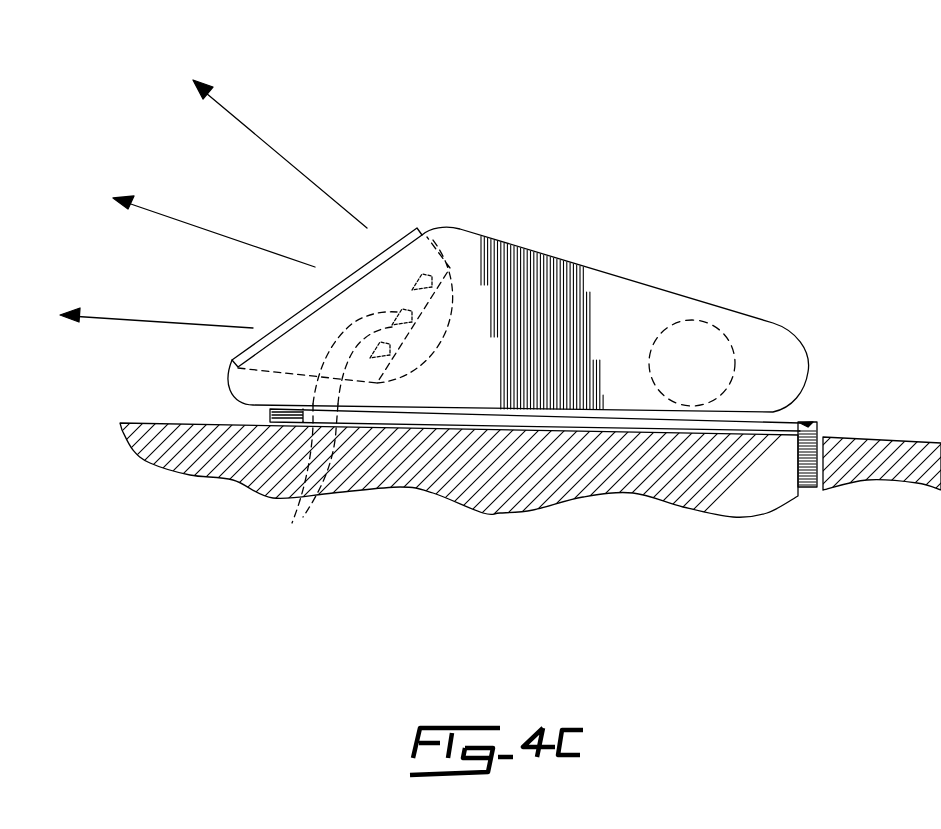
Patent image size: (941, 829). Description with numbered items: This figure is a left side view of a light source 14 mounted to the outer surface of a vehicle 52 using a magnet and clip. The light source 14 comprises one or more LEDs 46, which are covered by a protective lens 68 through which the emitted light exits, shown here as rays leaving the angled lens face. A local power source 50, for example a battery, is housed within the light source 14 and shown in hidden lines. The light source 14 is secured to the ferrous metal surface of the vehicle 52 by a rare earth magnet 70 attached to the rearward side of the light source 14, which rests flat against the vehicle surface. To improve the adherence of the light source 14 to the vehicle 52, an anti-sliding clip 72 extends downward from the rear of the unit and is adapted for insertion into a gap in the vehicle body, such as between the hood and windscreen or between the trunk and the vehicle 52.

The light source 14 is at (568, 262).
The LEDs 46 is at (331, 434).
The power source 50 is at (713, 327).
The vehicle 52 is at (167, 423).
The protective lens 68 is at (398, 237).
The rare earth magnet 70 is at (553, 425).
The anti-sliding clip 72 is at (816, 422).